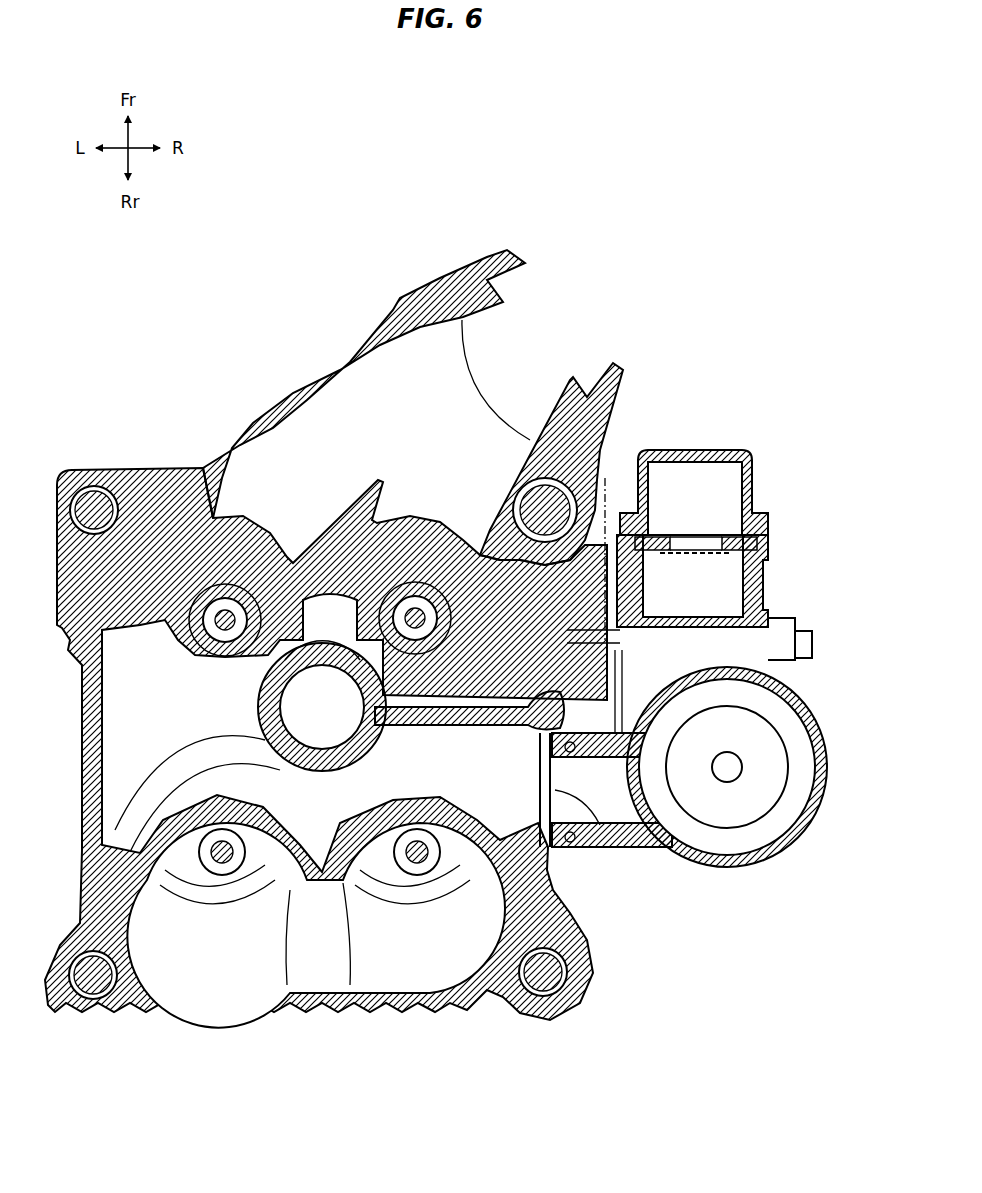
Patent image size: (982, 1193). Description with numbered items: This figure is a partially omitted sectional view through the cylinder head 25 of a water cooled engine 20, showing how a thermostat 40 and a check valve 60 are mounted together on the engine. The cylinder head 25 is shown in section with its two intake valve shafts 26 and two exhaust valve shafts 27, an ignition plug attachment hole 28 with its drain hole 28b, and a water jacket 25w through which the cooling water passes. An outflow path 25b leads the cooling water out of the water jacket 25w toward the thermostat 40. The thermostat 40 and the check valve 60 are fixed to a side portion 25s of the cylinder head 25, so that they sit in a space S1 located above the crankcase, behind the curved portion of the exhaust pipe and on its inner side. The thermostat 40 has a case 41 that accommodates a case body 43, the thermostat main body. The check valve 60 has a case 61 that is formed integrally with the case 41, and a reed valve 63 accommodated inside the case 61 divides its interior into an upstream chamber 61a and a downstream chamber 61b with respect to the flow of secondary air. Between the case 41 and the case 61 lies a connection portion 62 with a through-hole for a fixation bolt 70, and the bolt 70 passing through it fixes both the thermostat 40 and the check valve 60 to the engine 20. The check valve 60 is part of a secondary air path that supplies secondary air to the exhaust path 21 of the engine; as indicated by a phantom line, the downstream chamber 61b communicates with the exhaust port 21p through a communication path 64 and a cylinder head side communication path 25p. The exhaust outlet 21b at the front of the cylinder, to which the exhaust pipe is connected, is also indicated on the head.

The water cooled engine 20 is at (462, 1015).
The exhaust path 21 is at (335, 415).
The exhaust outlet 21b is at (555, 325).
The exhaust port 21p is at (455, 522).
The cylinder head 25 is at (83, 470).
The water jacket 25w is at (153, 690).
The cylinder head side communication path 25p is at (610, 547).
The side portion 25s is at (605, 632).
The outflow path 25b is at (603, 850).
The intake valve shaft 26 is at (220, 858).
The exhaust valve shaft 27 is at (235, 600).
The ignition plug attachment hole 28 is at (320, 737).
The drain hole 28b is at (473, 705).
The thermostat 40 is at (683, 801).
The case 41 is at (680, 852).
The case body 43 is at (762, 828).
The check valve 60 is at (723, 514).
The case 61 is at (722, 446).
The upstream chamber 61a is at (673, 482).
The downstream chamber 61b is at (760, 572).
The connection portion 62 is at (742, 645).
The reed valve 63 is at (697, 547).
The communication path 64 is at (643, 583).
The fixation bolt 70 is at (805, 631).
The space S1 is at (700, 900).